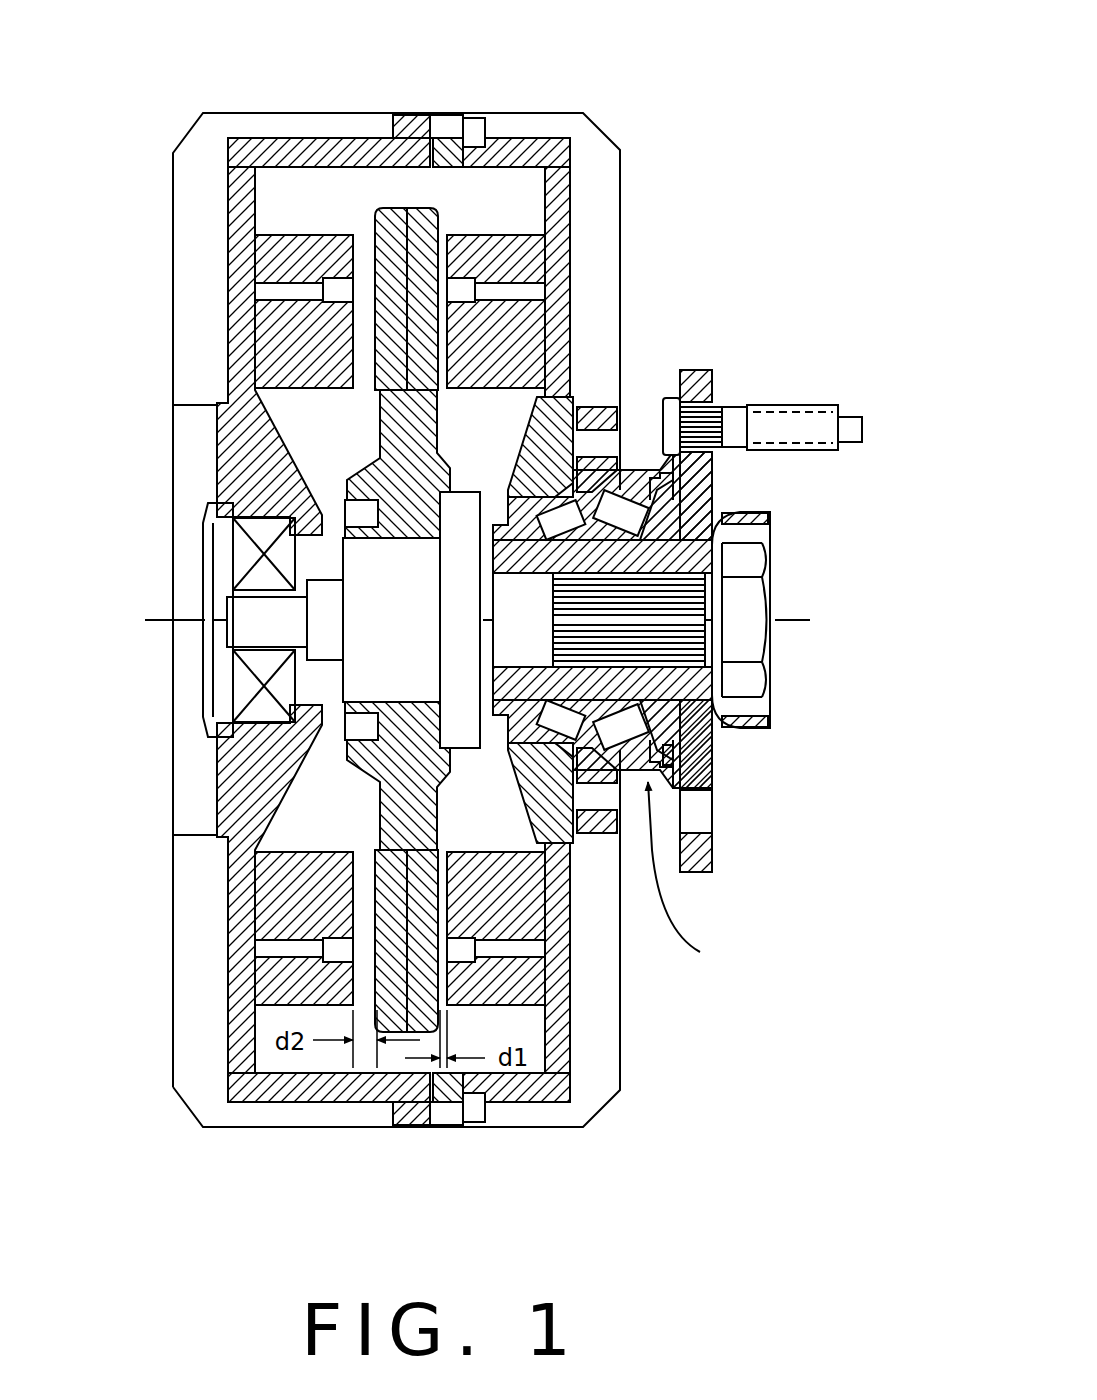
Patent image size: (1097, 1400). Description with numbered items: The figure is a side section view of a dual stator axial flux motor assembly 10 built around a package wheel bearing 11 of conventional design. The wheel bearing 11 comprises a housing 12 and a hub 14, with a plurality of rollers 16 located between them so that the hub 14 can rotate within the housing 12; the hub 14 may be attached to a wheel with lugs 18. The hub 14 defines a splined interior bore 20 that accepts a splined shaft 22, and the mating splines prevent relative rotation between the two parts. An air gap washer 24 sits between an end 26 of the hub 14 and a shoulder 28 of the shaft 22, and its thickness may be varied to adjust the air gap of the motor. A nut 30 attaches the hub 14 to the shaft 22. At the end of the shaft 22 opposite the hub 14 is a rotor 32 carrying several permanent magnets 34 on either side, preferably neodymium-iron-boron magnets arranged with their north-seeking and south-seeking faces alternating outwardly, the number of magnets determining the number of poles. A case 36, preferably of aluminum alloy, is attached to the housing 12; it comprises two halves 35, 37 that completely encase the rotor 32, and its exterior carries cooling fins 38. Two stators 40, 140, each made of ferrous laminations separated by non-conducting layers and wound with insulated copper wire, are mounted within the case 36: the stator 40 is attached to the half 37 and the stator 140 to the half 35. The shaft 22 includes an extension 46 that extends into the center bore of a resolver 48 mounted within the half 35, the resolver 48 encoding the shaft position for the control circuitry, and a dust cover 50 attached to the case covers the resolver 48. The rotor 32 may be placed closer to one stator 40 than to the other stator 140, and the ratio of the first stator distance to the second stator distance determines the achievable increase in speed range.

The assembly 10 is at (477, 310).
The package wheel bearing 11 is at (699, 870).
The housing 12 is at (625, 487).
The hub 14 is at (707, 368).
The rollers 16 is at (627, 757).
The lugs 18 is at (842, 405).
The splined interior bore 20 is at (705, 517).
The splined shaft 22 is at (673, 590).
The air gap washer 24 is at (503, 490).
The end 26 is at (478, 668).
The shoulder 28 is at (463, 680).
The nut 30 is at (773, 572).
The rotor 32 is at (419, 516).
The permanent magnets 34 is at (378, 222).
The half 35 is at (413, 1130).
The case 36 is at (232, 1045).
The half 37 is at (450, 1130).
The cooling fins 38 is at (622, 170).
The stator 40 is at (510, 263).
The extension 46 is at (225, 602).
The resolver 48 is at (248, 556).
The dust cover 50 is at (210, 668).
The stator 140 is at (275, 253).